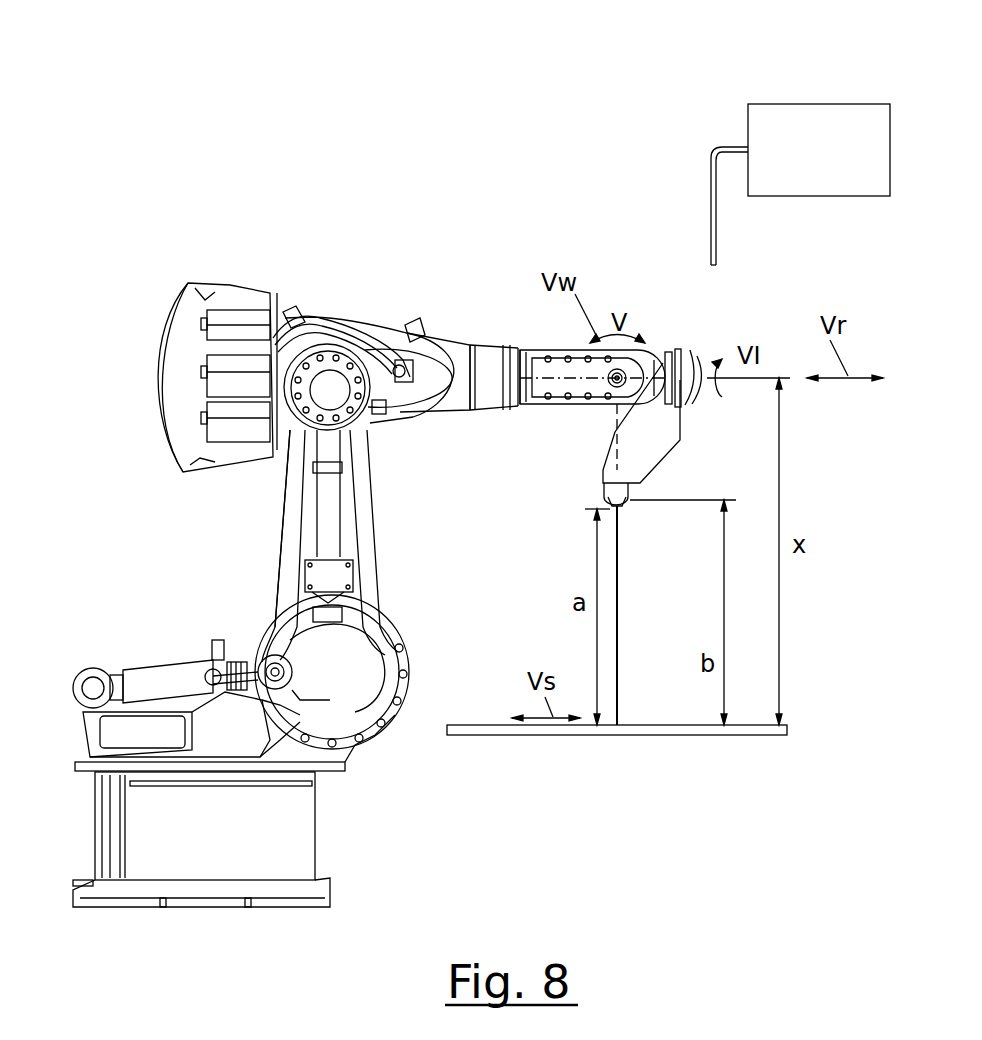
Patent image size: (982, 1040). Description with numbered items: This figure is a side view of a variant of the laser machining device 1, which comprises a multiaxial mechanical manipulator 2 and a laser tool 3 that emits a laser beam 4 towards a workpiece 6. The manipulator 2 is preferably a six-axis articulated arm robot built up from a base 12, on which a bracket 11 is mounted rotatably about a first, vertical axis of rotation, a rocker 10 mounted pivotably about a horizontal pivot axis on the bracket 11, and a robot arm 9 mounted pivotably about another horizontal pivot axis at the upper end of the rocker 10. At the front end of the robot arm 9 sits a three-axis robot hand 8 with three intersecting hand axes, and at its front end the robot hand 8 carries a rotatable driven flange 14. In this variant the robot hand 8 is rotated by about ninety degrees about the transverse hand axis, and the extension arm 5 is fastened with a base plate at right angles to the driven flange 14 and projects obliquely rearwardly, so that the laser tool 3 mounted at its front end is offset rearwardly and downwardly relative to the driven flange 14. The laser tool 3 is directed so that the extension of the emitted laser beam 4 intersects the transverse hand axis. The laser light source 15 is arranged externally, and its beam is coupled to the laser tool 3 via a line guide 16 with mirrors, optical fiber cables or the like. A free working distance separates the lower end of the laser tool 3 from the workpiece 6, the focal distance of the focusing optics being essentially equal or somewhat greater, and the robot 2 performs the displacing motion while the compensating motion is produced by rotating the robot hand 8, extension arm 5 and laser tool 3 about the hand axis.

The laser machining device 1 is at (360, 280).
The manipulator 2 is at (206, 350).
The laser tool 3 is at (612, 490).
The laser beam 4 is at (618, 618).
The extension arm 5 is at (653, 450).
The workpiece 6 is at (742, 736).
The robot hand 8 is at (648, 358).
The robot arm 9 is at (454, 360).
The rocker 10 is at (323, 518).
The bracket 11 is at (138, 724).
The base 12 is at (285, 815).
The driven flange 14 is at (706, 348).
The laser light source 15 is at (795, 128).
The line guide 16 is at (709, 178).